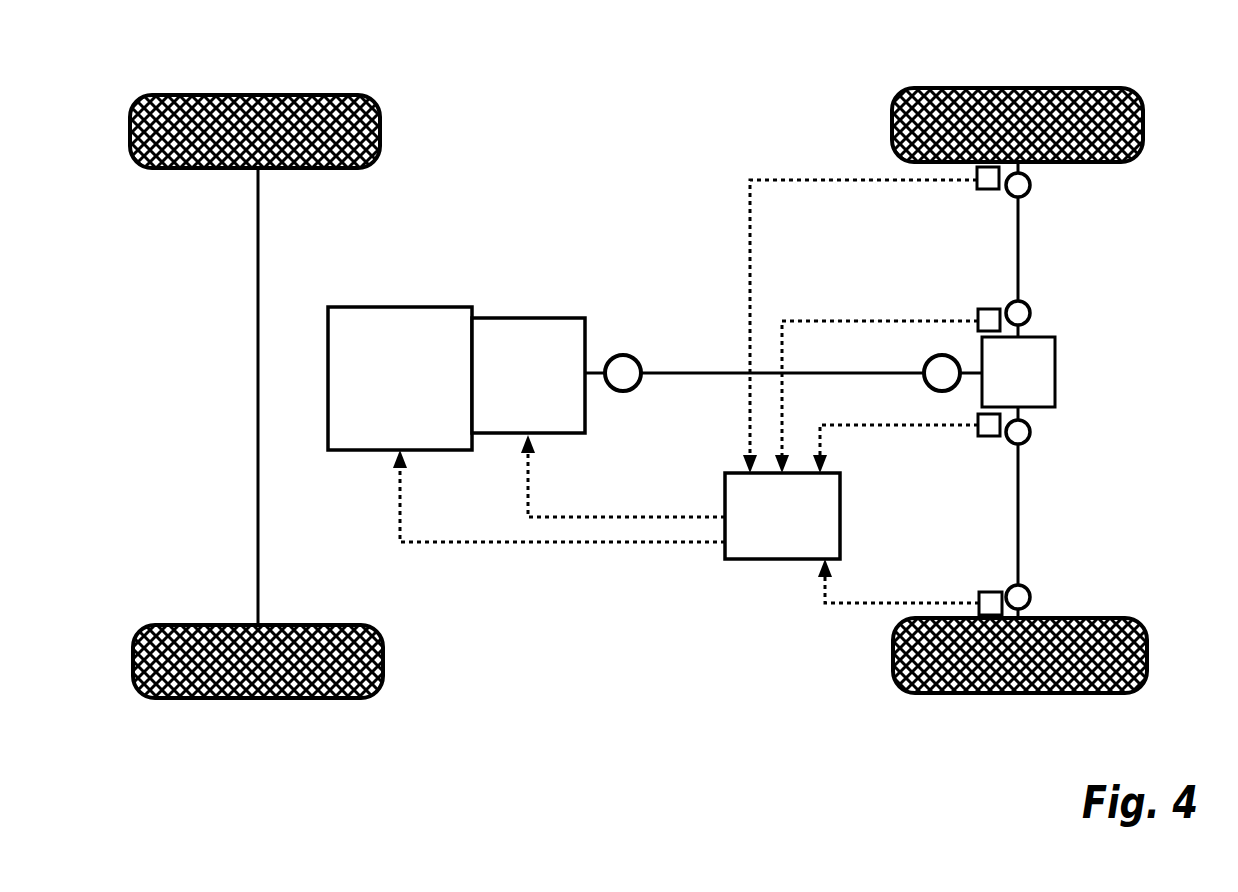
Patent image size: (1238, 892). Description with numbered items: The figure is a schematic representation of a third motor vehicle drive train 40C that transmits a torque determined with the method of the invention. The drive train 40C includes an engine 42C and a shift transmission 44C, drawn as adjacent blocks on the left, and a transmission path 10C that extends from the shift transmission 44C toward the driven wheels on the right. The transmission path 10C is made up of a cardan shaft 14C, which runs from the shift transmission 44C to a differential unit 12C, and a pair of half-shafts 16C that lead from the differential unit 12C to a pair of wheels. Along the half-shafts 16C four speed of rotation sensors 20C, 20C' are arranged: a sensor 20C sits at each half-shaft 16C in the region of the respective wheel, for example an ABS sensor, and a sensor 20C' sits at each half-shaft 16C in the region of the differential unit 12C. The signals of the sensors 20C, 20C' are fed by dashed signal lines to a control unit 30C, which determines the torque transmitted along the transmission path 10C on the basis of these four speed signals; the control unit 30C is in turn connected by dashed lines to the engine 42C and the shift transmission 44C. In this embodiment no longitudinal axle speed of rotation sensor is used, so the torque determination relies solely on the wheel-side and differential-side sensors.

The transmission path 10C is at (1084, 300).
The differential unit 12C is at (1057, 390).
The cardan shaft 14C is at (677, 373).
The half-shafts 16C is at (1020, 242).
The speed of rotation sensor 20C is at (963, 391).
The speed of rotation sensor 20C' is at (962, 369).
The control unit 30C is at (745, 559).
The drive train 40C is at (600, 268).
The engine 42C is at (422, 307).
The shift transmission 44C is at (520, 318).